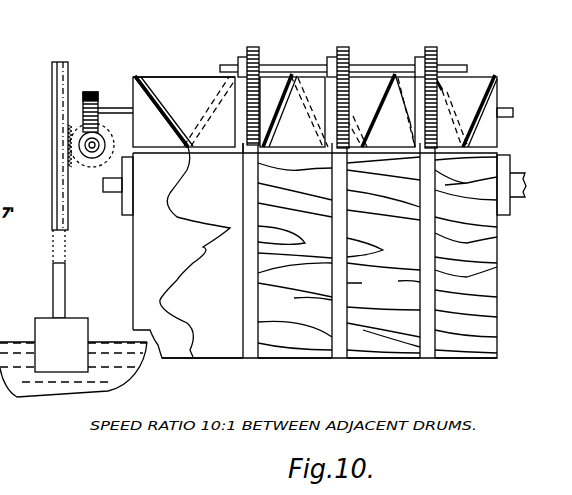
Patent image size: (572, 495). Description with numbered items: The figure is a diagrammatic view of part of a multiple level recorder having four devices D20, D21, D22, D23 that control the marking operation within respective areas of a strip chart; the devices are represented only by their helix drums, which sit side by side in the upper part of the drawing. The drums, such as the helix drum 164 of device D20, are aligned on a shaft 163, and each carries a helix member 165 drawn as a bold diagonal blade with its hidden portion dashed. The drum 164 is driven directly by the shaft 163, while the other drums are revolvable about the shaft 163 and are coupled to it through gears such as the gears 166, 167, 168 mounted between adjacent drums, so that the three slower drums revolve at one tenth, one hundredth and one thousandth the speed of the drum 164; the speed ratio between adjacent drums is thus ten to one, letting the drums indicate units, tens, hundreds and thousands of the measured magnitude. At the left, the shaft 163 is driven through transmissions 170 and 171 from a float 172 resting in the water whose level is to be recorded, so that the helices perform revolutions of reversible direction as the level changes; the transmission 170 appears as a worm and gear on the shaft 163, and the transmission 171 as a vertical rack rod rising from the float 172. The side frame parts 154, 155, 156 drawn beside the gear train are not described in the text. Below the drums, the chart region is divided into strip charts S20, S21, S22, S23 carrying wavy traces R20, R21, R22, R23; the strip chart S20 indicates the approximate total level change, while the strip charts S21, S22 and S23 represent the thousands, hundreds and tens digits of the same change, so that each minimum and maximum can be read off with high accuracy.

The bearing block 154 is at (117, 189).
The bracket 155 is at (128, 207).
The frame side wall 156 is at (136, 228).
The shaft 163 is at (116, 108).
The helix drum 164 is at (157, 83).
The helix member 165 is at (154, 86).
The gear 166 is at (239, 148).
The gear 167 is at (256, 50).
The gear 168 is at (243, 57).
The transmission 170 is at (103, 164).
The transmission 171 is at (65, 272).
The float 172 is at (77, 323).
The marking control device D20 is at (222, 61).
The marking control device D21 is at (305, 61).
The marking control device D22 is at (398, 61).
The marking control device D23 is at (478, 61).
The record trace 20 R20 is at (176, 212).
The record trace 21 R21 is at (294, 298).
The record trace 22 R22 is at (383, 255).
The record trace 23 R23 is at (480, 280).
The strip chart S20 is at (223, 362).
The strip chart S21 is at (322, 362).
The strip chart S22 is at (397, 362).
The strip chart S23 is at (480, 362).